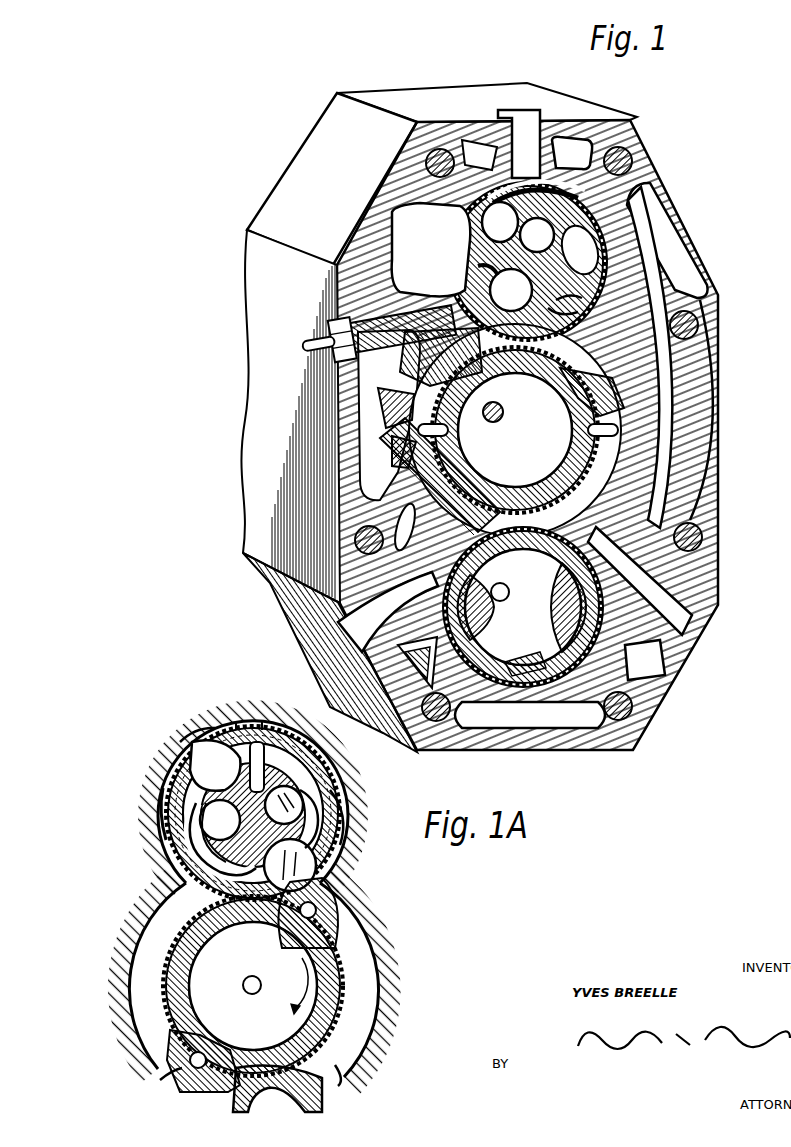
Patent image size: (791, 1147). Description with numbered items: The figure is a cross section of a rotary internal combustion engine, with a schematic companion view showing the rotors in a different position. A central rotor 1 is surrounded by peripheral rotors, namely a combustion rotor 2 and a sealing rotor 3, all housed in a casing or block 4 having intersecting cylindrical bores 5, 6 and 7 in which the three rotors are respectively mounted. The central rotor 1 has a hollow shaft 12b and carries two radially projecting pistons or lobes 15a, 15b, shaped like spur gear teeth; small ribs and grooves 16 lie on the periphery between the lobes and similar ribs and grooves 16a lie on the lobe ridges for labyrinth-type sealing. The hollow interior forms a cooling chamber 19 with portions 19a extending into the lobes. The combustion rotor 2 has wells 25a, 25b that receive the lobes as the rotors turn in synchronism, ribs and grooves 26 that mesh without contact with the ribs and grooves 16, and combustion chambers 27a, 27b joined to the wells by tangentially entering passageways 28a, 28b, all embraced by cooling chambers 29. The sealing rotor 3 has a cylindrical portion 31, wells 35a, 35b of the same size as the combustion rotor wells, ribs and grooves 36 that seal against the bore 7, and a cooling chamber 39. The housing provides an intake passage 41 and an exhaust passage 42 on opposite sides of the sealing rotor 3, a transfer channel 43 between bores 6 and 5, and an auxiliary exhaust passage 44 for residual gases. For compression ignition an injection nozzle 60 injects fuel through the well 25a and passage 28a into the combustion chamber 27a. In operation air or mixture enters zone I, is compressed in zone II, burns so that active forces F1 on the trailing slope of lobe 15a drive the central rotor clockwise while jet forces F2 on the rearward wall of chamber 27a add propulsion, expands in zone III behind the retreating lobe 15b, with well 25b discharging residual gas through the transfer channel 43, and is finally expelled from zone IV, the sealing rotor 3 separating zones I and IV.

In FIG. 1, the central rotor 1 is at (515, 430).
In FIG. 1A, the central rotor 1 is at (340, 998).
In FIG. 1, the combustion rotor 2 is at (524, 362).
In FIG. 1A, the combustion rotor 2 is at (290, 746).
In FIG. 1, the sealing rotor 3 is at (500, 553).
In FIG. 1A, the sealing rotor 3 is at (322, 1106).
In FIG. 1, the casing or block 4 is at (500, 22).
In FIG. 1, the cylindrical bore 5 is at (658, 356).
In FIG. 1A, the cylindrical bore 5 is at (166, 895).
In FIG. 1, the cylindrical bore 6 is at (566, 180).
In FIG. 1, the cylindrical bore 7 is at (645, 660).
In FIG. 1, the hollow shaft 12b is at (492, 401).
In FIG. 1A, the hollow shaft 12b is at (248, 987).
In FIG. 1, the piston or lobe 15a is at (398, 410).
In FIG. 1A, the piston or lobe 15a is at (170, 1052).
In FIG. 1, the piston or lobe 15b is at (590, 370).
In FIG. 1A, the piston or lobe 15b is at (335, 912).
In FIG. 1, the ribs and grooves 16 is at (585, 500).
In FIG. 1A, the ribs and grooves 16 is at (336, 963).
In FIG. 1, the ribs and grooves 16a is at (400, 433).
In FIG. 1A, the ribs and grooves 16a is at (176, 1080).
In FIG. 1, the cooling chamber 19 is at (500, 470).
In FIG. 1A, the cooling chamber 19 is at (240, 960).
In FIG. 1, the cooling chamber portions 19a is at (452, 433).
In FIG. 1A, the cooling chamber portions 19a is at (300, 918).
In FIG. 1, the well 25a is at (478, 250).
In FIG. 1A, the well 25a is at (196, 746).
In FIG. 1, the well 25b is at (575, 228).
In FIG. 1A, the well 25b is at (322, 862).
In FIG. 1, the ribs and grooves 26 is at (562, 342).
In FIG. 1A, the ribs and grooves 26 is at (172, 773).
In FIG. 1, the combustion chamber 27a is at (490, 290).
In FIG. 1A, the combustion chamber 27a is at (232, 822).
In FIG. 1, the combustion chamber 27b is at (587, 274).
In FIG. 1A, the combustion chamber 27b is at (326, 802).
In FIG. 1, the passageway 28a is at (503, 246).
In FIG. 1A, the passageway 28a is at (234, 786).
In FIG. 1, the passageway 28b is at (583, 288).
In FIG. 1A, the passageway 28b is at (223, 839).
In FIG. 1, the cooling chambers 29 is at (537, 186).
In FIG. 1A, the cooling chambers 29 is at (312, 766).
In FIG. 1, the cylindrical portion 31 is at (530, 676).
In FIG. 1, the well 35a is at (485, 625).
In FIG. 1, the well 35b is at (612, 607).
In FIG. 1, the ribs and grooves 36 is at (530, 715).
In FIG. 1, the cooling chamber 39 is at (522, 586).
In FIG. 1, the intake passage 41 is at (358, 643).
In FIG. 1, the exhaust passage 42 is at (698, 620).
In FIG. 1A, the exhaust passage 42 is at (338, 1080).
In FIG. 1, the transfer channel 43 is at (667, 240).
In FIG. 1A, the transfer channel 43 is at (352, 818).
In FIG. 1, the auxiliary exhaust passage 44 is at (522, 126).
In FIG. 1A, the auxiliary exhaust passage 44 is at (260, 728).
In FIG. 1, the injection nozzle 60 is at (352, 325).
In FIG. 1, the zone I is at (396, 494).
In FIG. 1, the zone II is at (441, 368).
In FIG. 1, the zone III is at (622, 361).
In FIG. 1, the zone IV is at (627, 488).
In FIG. 1A, the active forces F1 is at (290, 865).
In FIG. 1A, the jet forces F2 is at (264, 767).